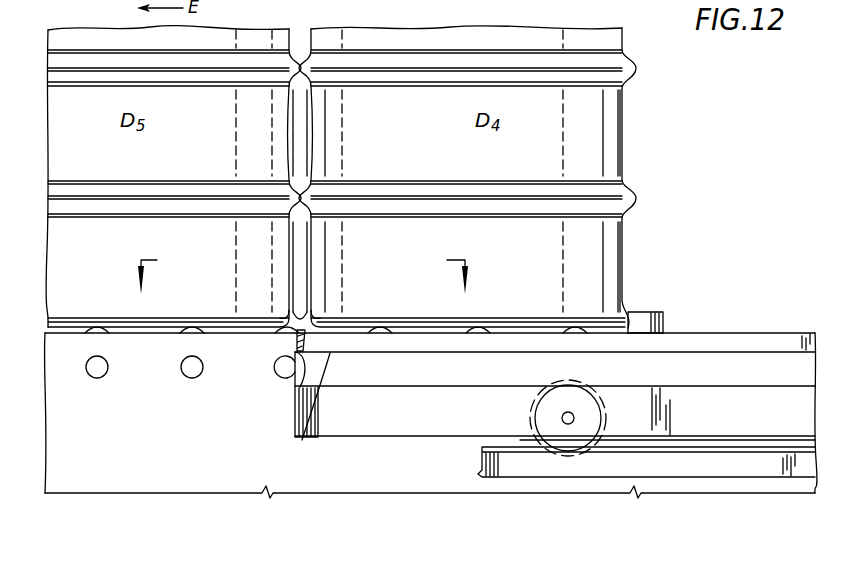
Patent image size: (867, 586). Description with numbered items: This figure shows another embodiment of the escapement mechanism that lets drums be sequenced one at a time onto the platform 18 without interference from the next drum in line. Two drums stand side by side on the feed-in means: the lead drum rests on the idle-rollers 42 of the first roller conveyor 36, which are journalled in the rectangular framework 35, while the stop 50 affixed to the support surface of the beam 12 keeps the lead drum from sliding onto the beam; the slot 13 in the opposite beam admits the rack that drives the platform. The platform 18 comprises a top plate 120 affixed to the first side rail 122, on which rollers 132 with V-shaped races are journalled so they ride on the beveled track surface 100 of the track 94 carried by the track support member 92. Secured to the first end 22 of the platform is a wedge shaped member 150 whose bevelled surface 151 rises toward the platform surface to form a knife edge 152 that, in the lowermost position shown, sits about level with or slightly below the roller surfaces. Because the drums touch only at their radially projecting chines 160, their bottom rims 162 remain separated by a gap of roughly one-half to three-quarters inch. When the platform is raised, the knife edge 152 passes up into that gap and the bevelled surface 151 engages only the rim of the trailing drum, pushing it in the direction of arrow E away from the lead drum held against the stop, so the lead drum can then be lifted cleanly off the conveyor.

The beam 12 is at (683, 338).
The slot 13 is at (302, 277).
The platform 18 is at (795, 343).
The first end 22 is at (320, 396).
The rectangular framework 35 is at (147, 470).
The first roller conveyor 36 is at (81, 474).
The idle-rollers 42 is at (183, 338).
The stop 50 is at (648, 312).
The track support member 92 is at (678, 487).
The track 94 is at (600, 467).
The beveled track surface 100 is at (735, 445).
The top plate 120 is at (537, 352).
The first side rail 122 is at (420, 425).
The roller 132 is at (560, 450).
The wedge shaped member 150 is at (295, 392).
The bevelled surface 151 is at (297, 343).
The knife edge 152 is at (298, 328).
The chines 160 is at (277, 112).
The bottom rims 162 is at (283, 320).